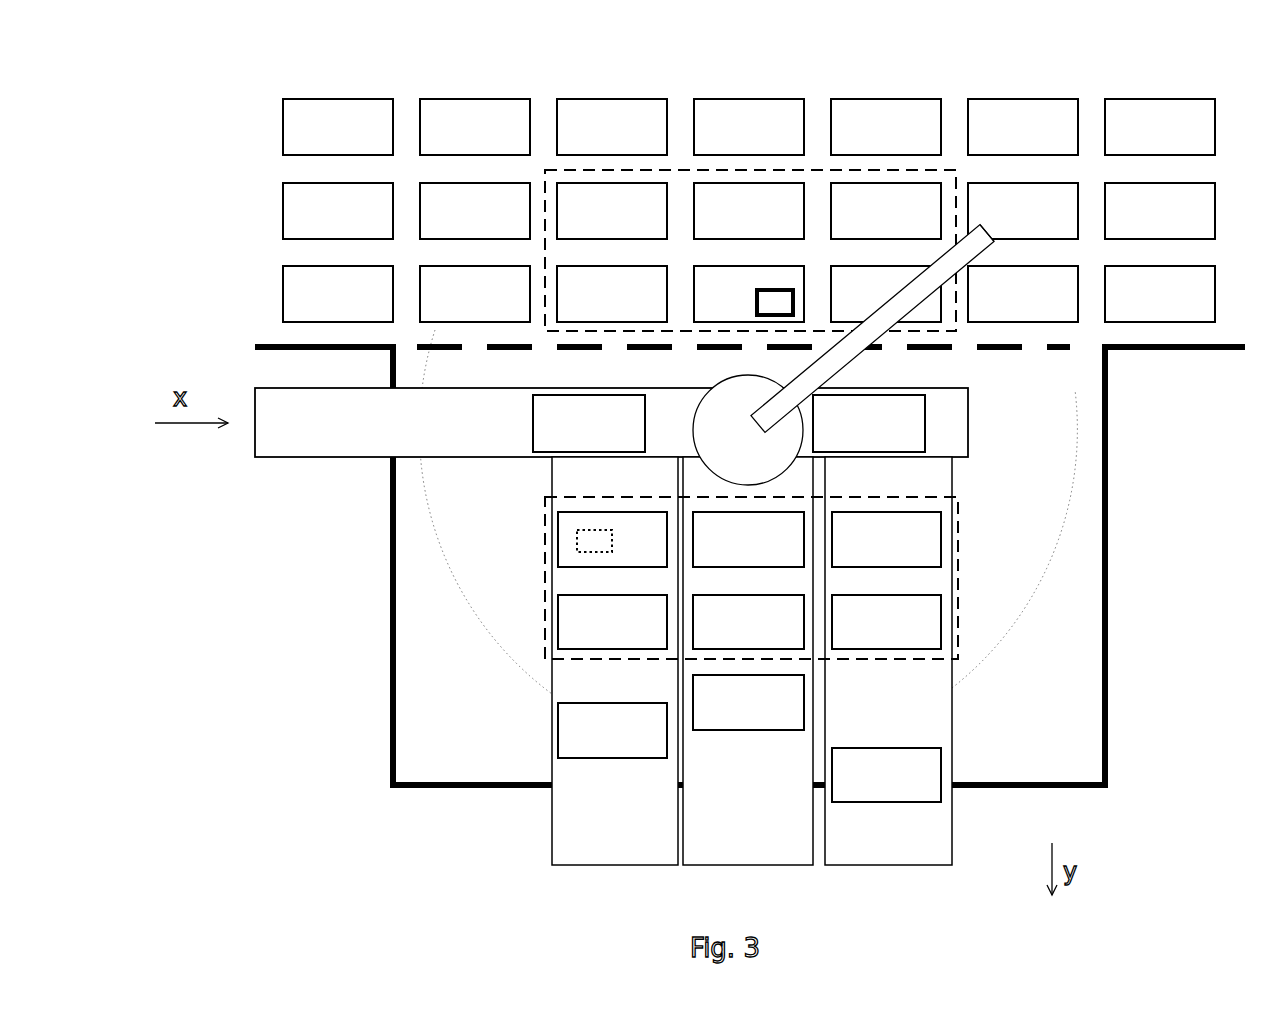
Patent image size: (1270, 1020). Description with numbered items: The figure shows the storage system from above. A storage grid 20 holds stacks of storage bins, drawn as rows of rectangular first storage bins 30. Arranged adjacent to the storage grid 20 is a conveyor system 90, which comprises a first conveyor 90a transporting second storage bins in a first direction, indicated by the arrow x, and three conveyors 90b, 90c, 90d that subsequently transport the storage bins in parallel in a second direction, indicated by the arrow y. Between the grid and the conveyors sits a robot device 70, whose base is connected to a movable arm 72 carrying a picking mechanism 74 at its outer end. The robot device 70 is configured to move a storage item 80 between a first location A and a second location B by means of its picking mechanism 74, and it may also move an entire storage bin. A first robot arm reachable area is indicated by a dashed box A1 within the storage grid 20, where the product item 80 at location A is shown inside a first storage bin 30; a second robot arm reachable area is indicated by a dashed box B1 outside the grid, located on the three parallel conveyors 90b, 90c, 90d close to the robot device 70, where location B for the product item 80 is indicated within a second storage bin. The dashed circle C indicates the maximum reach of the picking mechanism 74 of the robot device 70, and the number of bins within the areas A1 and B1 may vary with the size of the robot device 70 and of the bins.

The storage grid 20 is at (250, 221).
The first storage bin 30 is at (731, 278).
The robot device 70 is at (708, 374).
The movable arm 72 is at (912, 302).
The picking mechanism 74 is at (988, 238).
The storage item 80 is at (774, 290).
The conveyor system 90 is at (572, 651).
The first conveyor 90a is at (315, 425).
The conveyor 90b is at (562, 833).
The conveyor 90c is at (747, 833).
The conveyor 90d is at (892, 835).
The first robot arm reachable area A1 is at (957, 312).
The second robot arm reachable area B1 is at (960, 497).
The dashed circle C is at (1077, 442).